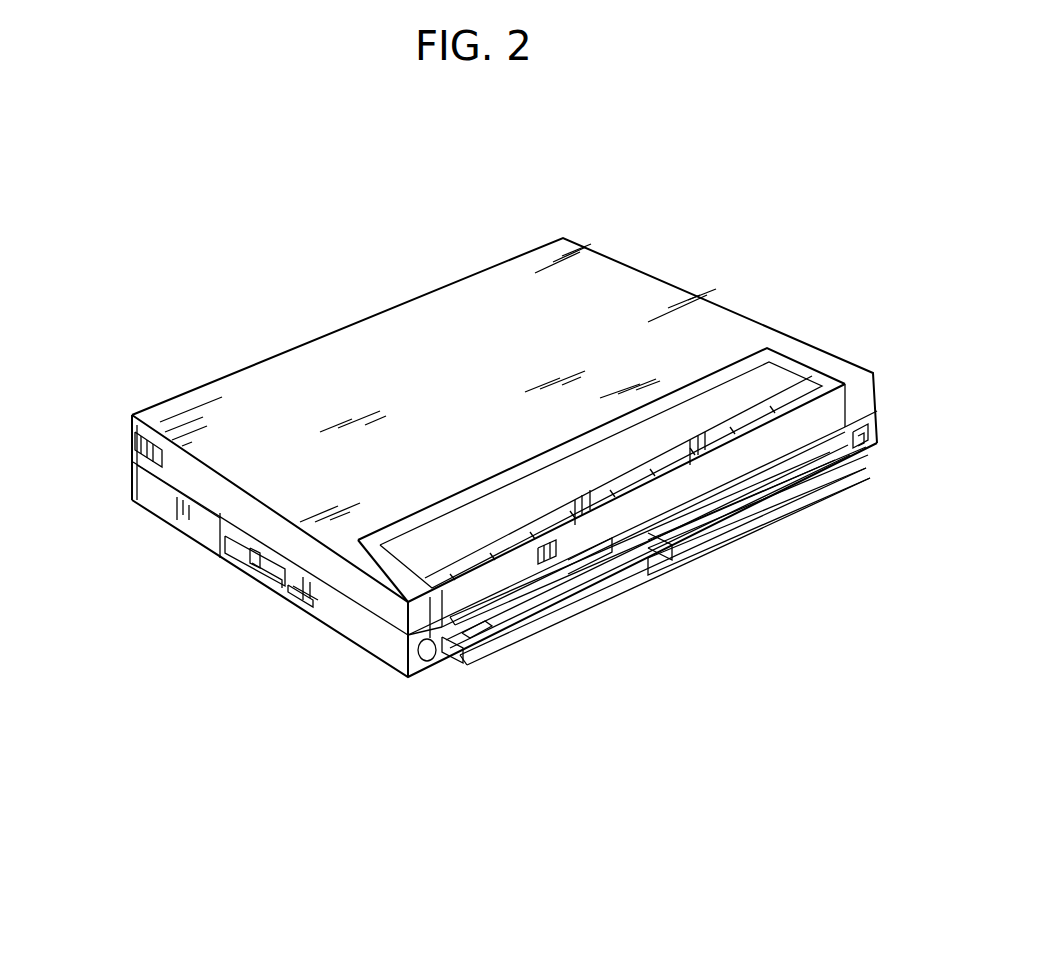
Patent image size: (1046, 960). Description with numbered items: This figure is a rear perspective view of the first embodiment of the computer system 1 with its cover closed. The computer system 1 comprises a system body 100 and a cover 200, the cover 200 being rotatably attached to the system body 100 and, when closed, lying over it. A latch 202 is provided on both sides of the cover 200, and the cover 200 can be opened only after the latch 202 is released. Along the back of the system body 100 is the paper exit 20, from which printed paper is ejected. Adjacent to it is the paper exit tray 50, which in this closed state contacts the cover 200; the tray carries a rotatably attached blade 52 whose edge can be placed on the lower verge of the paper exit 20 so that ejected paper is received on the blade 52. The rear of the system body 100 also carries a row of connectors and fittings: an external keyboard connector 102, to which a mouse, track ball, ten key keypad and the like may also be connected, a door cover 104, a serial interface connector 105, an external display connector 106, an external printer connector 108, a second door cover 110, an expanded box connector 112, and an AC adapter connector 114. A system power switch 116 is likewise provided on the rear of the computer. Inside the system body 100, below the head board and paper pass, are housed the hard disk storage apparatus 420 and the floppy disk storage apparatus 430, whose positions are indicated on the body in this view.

The computer system 1 is at (372, 284).
The paper exit 20 is at (670, 510).
The paper exit tray 50 is at (722, 375).
The blade 52 is at (770, 383).
The system body 100 is at (372, 637).
The external keyboard connector 102 is at (420, 662).
The door cover 104 is at (555, 625).
The serial interface connector 105 is at (480, 637).
The external display connector 106 is at (508, 634).
The external printer connector 108 is at (553, 558).
The door cover 110 is at (775, 510).
The expanded box connector 112 is at (800, 477).
The AC adapter connector 114 is at (870, 447).
The system power switch 116 is at (575, 572).
The cover 200 is at (250, 388).
The latch 202 is at (135, 430).
The hard disk storage apparatus 420 is at (172, 510).
The floppy disk storage apparatus 430 is at (272, 592).